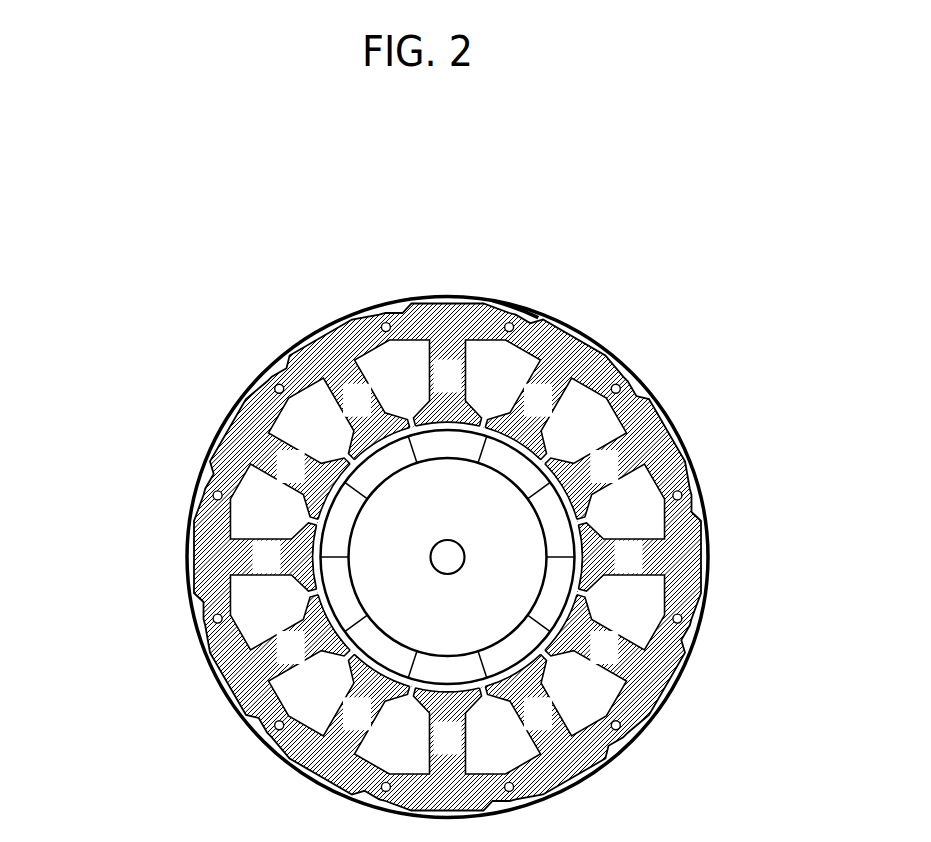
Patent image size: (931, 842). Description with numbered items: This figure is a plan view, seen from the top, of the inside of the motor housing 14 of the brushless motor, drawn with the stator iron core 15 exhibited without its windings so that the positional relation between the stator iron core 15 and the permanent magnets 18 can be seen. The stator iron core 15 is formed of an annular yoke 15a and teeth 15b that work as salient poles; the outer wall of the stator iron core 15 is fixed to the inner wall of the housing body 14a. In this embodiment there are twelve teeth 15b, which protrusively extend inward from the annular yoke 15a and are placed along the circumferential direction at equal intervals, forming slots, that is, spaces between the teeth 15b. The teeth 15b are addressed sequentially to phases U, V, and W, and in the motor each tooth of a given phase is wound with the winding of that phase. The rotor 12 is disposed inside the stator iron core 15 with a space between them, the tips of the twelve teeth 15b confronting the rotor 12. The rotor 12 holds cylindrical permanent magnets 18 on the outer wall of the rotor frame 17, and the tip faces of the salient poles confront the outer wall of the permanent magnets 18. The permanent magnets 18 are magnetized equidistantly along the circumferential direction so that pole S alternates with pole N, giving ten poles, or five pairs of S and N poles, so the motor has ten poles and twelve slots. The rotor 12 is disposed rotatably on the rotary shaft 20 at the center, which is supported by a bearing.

The rotor 12 is at (574, 493).
The motor housing 14 is at (583, 333).
The housing body 14a is at (528, 307).
The stator iron core 15 is at (465, 557).
The annular yoke 15a is at (208, 520).
The teeth 15b is at (242, 473).
The rotor frame 17 is at (495, 503).
The permanent magnets 18 is at (508, 460).
The rotary shaft 20 is at (453, 548).